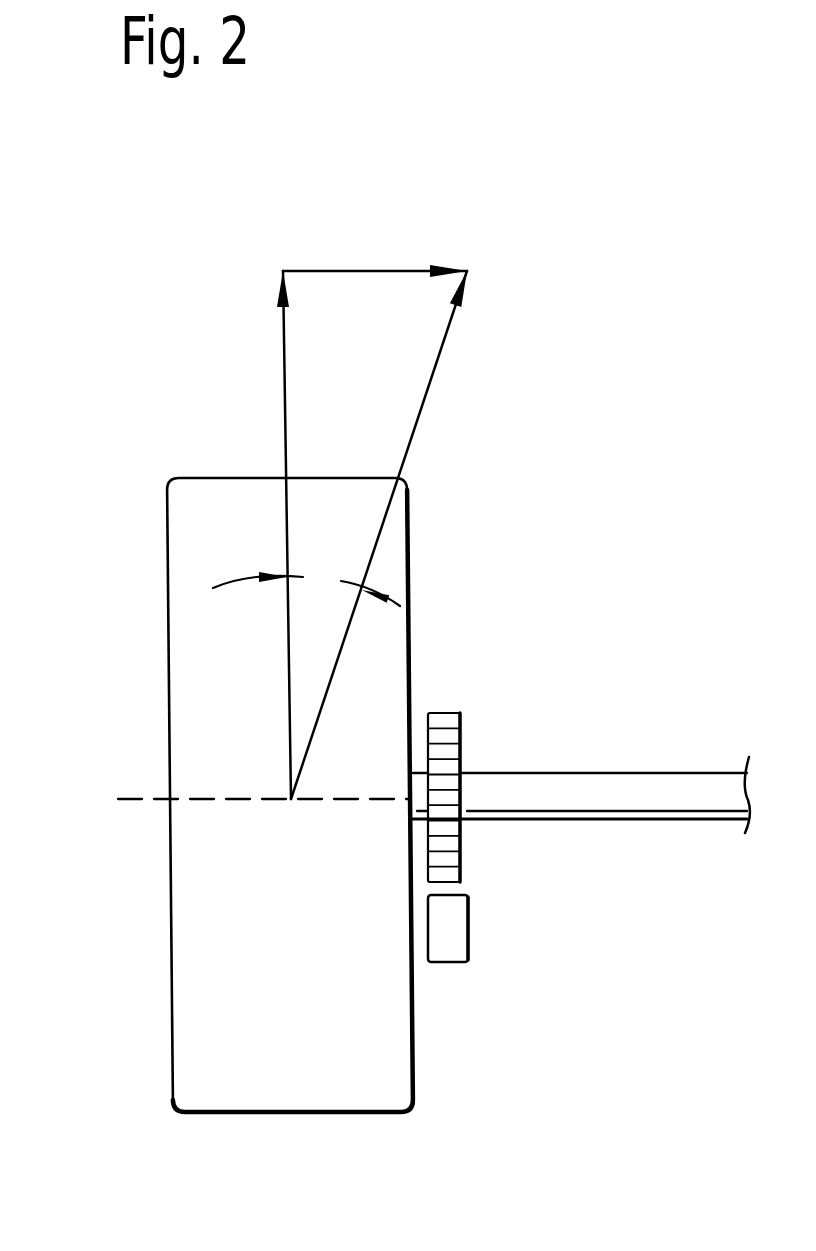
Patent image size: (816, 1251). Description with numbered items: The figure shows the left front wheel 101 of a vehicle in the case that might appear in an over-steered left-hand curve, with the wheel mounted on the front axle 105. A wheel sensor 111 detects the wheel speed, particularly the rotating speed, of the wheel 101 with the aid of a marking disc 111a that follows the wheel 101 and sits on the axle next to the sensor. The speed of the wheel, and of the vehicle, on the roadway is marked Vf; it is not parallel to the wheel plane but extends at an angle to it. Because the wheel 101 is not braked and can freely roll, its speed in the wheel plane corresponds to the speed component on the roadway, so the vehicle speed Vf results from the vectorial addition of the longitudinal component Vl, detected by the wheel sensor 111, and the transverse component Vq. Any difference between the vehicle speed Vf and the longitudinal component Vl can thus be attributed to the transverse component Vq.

The left front wheel 101 is at (218, 975).
The front axle 105 is at (595, 793).
The wheel sensor 111 is at (452, 933).
The marking disc 111a is at (460, 744).
The transverse component Vq is at (363, 271).
The longitudinal component Vl is at (283, 354).
The vehicle speed Vf is at (435, 378).